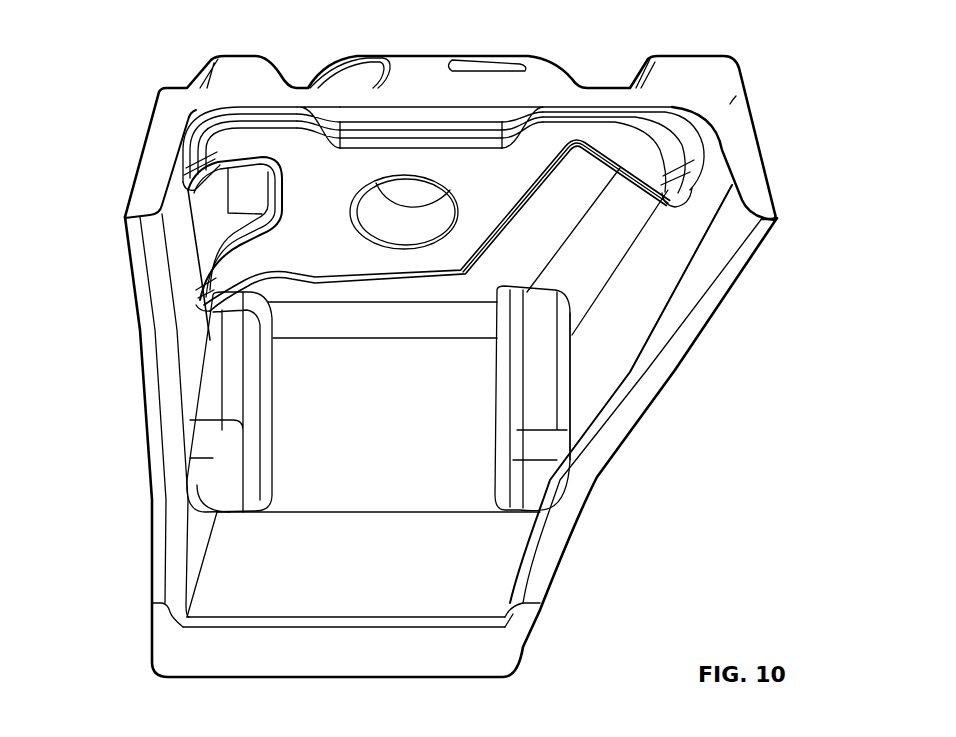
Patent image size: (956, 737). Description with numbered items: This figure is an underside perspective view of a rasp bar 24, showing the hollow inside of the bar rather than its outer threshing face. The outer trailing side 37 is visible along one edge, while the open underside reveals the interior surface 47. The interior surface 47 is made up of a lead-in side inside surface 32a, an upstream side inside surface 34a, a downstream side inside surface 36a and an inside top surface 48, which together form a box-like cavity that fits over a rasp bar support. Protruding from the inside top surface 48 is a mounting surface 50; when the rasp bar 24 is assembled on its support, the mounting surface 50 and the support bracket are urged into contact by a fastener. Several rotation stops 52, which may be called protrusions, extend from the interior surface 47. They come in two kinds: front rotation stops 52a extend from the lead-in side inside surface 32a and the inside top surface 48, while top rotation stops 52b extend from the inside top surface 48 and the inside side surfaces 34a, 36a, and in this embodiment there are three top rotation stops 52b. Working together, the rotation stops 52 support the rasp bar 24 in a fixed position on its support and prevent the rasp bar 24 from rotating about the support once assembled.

The rasp bar 24 is at (738, 44).
The trailing side 37 is at (732, 97).
The top rotation stops 52b is at (212, 152).
The mounting surface 50 is at (543, 151).
The downstream side inside surface 36a is at (660, 290).
The inside top surface 48 is at (557, 184).
The rotation stops 52 is at (555, 377).
The front rotation stops 52a is at (217, 412).
The upstream side inside surface 34a is at (183, 332).
The lead-in side inside surface 32a is at (260, 592).
The interior surface 47 is at (447, 478).